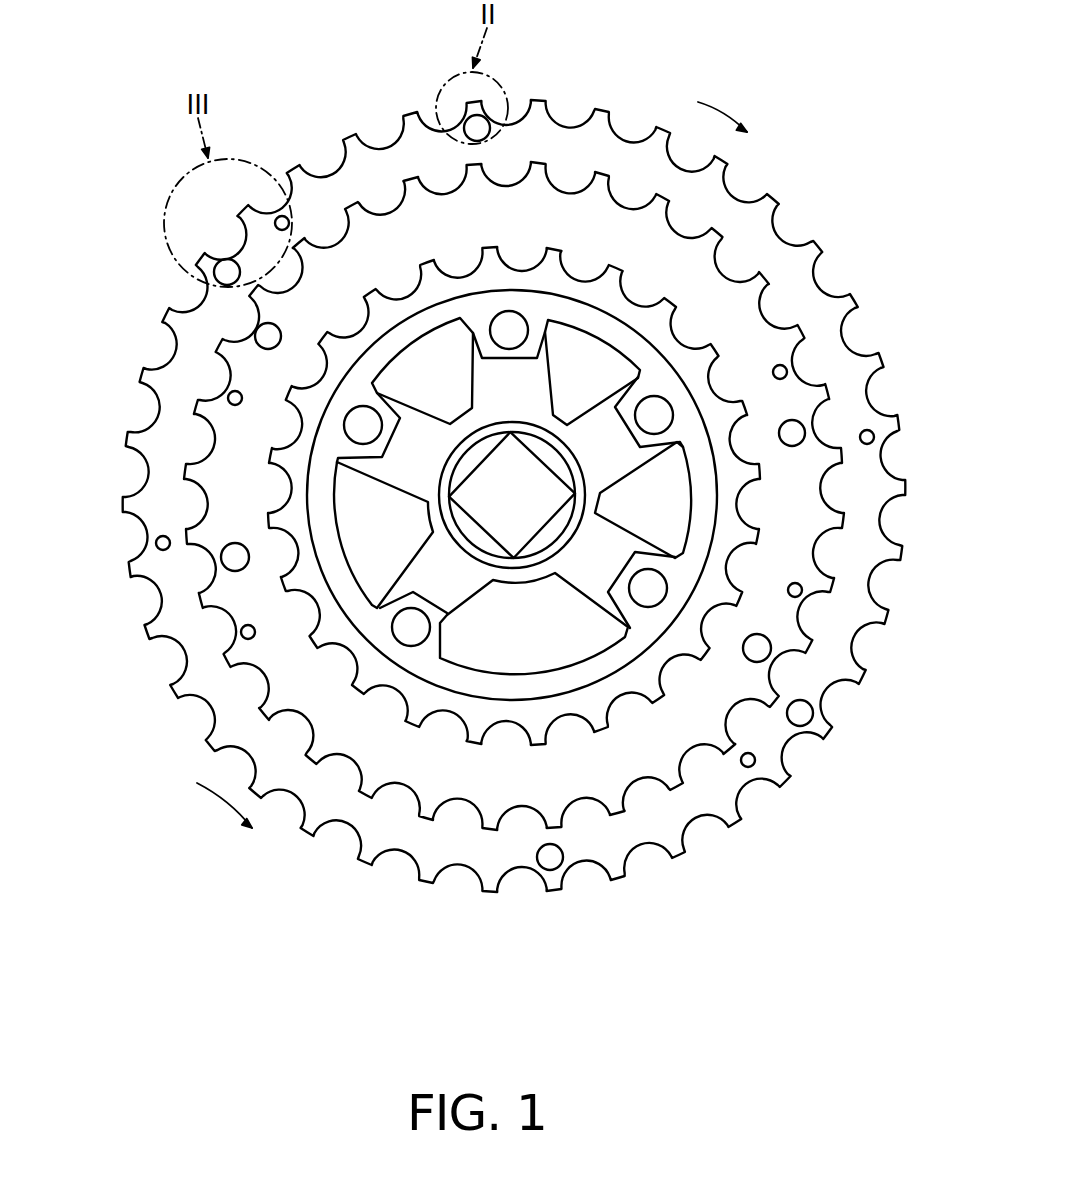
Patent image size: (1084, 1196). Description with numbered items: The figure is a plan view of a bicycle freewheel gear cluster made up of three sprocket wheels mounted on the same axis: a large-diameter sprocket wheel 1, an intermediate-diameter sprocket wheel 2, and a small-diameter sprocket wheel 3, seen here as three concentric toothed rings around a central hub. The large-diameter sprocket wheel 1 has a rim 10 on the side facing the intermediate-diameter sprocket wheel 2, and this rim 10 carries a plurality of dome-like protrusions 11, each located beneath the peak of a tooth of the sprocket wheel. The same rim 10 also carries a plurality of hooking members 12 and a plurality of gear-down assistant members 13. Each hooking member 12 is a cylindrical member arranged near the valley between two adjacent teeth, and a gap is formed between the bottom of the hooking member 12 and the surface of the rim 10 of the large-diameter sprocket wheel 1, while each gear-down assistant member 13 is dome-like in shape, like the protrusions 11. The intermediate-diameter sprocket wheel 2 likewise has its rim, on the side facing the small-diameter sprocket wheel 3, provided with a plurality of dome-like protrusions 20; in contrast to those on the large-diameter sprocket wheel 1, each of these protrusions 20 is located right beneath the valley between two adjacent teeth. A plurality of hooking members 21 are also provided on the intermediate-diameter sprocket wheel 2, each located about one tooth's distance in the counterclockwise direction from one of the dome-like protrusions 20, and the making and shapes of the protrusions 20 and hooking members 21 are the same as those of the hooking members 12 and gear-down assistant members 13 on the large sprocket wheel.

The rim 10 is at (603, 147).
The large-diameter sprocket wheel 1 is at (773, 195).
The intermediate-diameter sprocket wheel 2 is at (770, 277).
The small-diameter sprocket wheel 3 is at (765, 470).
The dome-like protrusion 11 is at (480, 126).
The hooking member 12 is at (274, 210).
The gear-down assistant member 13 is at (228, 266).
The dome-like protrusion 20 is at (802, 427).
The hooking member 21 is at (787, 368).